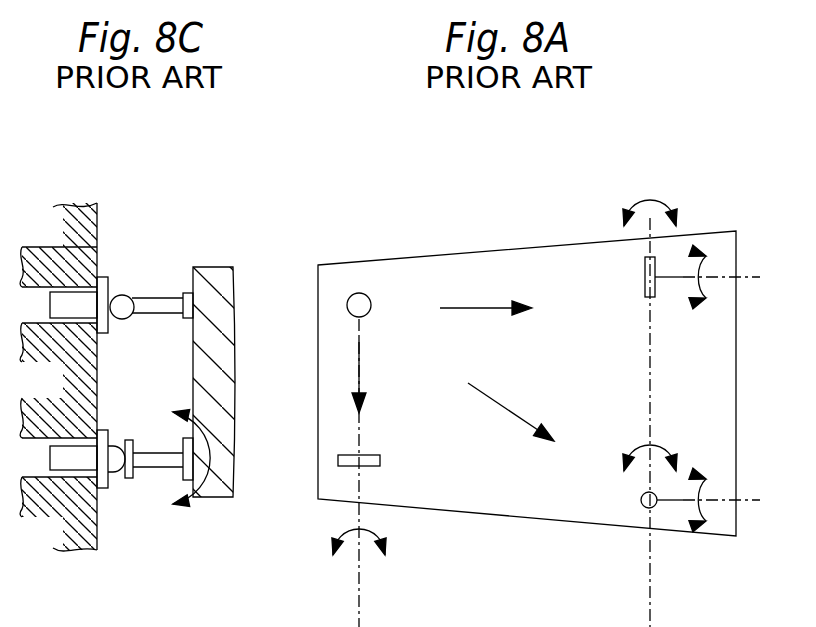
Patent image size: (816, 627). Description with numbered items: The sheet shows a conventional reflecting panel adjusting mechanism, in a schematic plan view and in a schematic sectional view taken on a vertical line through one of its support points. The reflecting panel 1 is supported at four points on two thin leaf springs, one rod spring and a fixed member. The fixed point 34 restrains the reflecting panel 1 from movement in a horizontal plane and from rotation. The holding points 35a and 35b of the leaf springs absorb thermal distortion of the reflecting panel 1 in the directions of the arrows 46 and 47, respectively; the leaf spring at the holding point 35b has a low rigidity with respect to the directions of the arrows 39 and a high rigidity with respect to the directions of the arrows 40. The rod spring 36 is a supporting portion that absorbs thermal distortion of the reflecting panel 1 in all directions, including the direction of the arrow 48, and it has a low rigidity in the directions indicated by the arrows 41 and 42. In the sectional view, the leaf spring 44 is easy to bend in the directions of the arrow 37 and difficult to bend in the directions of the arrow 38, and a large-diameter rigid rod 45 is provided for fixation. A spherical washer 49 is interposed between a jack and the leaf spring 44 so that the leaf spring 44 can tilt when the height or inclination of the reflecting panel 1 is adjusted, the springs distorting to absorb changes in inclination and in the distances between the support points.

In FIG. 8A, the reflecting panel 1 is at (736, 322).
In FIG. 8A, the fixed point 34 is at (360, 293).
In FIG. 8A, the holding point of leaf spring 35a is at (347, 467).
In FIG. 8A, the holding point of leaf spring 35b is at (655, 265).
In FIG. 8A, the rod spring 36 is at (655, 507).
In FIG. 8C, the arrow 37 is at (207, 498).
In FIG. 8A, the arrow 38 is at (388, 535).
In FIG. 8A, the arrows 39 is at (648, 198).
In FIG. 8A, the arrows 40 is at (703, 252).
In FIG. 8A, the arrows 41 is at (670, 448).
In FIG. 8A, the arrows 42 is at (700, 477).
In FIG. 8C, the leaf spring 44 is at (153, 468).
In FIG. 8C, the large-diameter rigid rod for fixation 45 is at (179, 293).
In FIG. 8A, the arrow 46 is at (478, 308).
In FIG. 8A, the arrow 47 is at (359, 365).
In FIG. 8A, the arrow 48 is at (505, 410).
In FIG. 8C, the spherical washer 49 is at (120, 294).